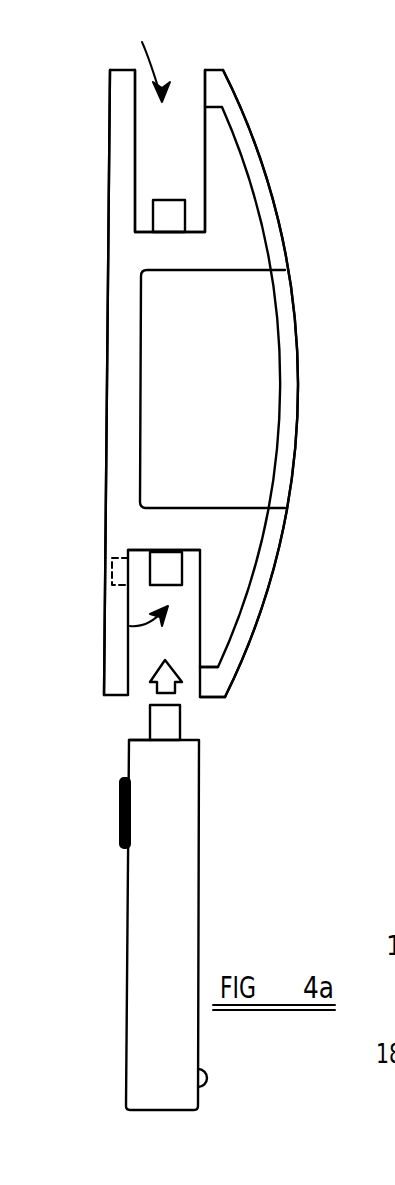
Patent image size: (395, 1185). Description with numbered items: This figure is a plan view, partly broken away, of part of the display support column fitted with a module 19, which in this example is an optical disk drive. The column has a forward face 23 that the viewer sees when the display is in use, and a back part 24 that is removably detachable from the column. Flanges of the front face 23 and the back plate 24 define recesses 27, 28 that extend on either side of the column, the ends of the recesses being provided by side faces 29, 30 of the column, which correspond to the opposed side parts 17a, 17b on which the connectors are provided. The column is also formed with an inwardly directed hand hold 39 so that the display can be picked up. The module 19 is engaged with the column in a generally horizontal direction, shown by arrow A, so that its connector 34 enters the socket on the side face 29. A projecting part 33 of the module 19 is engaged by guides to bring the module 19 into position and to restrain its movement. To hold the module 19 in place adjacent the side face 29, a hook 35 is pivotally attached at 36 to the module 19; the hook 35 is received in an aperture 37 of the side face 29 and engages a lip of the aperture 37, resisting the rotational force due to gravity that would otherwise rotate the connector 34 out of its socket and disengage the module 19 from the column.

The side part 17a is at (130, 626).
The side part 17b is at (158, 37).
The module 19 is at (145, 925).
The forward face 23 is at (104, 526).
The back part 24 is at (287, 260).
The recess 27 is at (207, 688).
The recess 28 is at (178, 110).
The side face 29 is at (189, 554).
The side face 30 is at (196, 232).
The projecting part 33 is at (124, 822).
The connector 34 is at (148, 720).
The hook 35 is at (127, 752).
The pivot 36 is at (115, 170).
The aperture 37 is at (112, 577).
The hand hold 39 is at (253, 425).
The arrow A is at (152, 682).